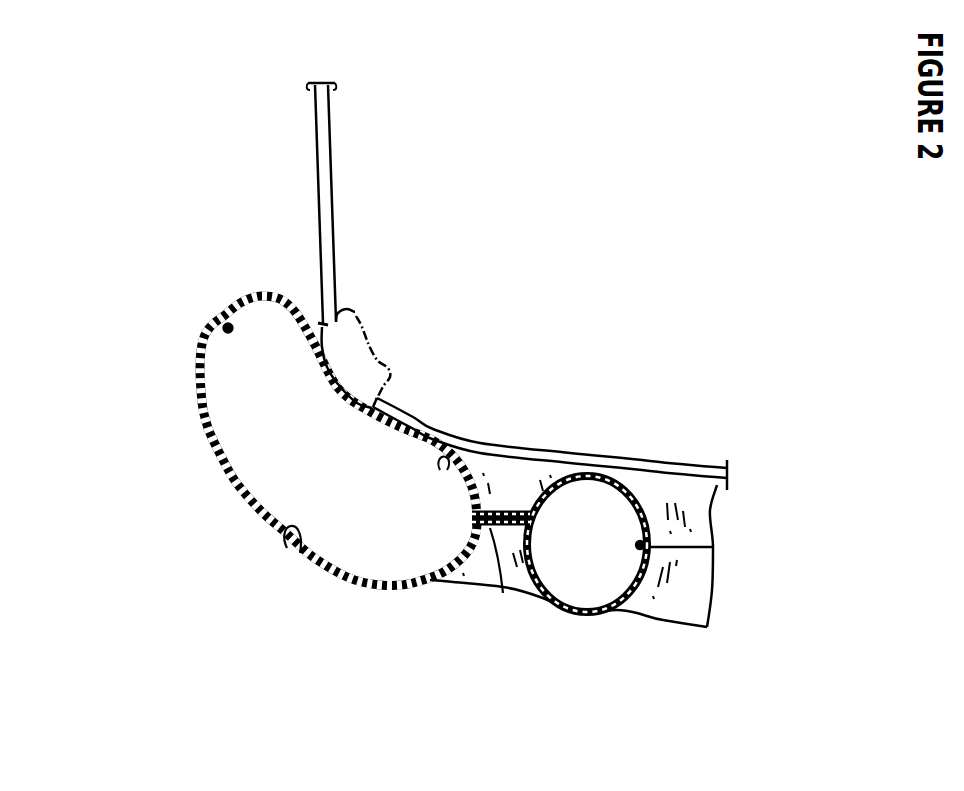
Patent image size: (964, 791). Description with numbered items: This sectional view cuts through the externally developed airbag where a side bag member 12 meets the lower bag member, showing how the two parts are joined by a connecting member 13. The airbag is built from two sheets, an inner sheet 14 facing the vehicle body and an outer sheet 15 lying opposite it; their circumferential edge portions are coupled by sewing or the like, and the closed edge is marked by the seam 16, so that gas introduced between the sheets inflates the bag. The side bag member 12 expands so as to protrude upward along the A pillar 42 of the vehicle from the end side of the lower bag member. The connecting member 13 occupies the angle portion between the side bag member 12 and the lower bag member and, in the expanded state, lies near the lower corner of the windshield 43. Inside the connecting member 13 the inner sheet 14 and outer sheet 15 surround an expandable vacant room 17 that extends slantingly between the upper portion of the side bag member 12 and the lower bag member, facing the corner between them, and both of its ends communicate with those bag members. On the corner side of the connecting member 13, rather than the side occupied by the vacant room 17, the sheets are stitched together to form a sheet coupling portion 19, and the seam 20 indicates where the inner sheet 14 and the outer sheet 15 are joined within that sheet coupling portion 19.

The side bag member 12 is at (157, 490).
The connecting member 13 is at (558, 698).
The inner sheet 14 is at (437, 430).
The outer sheet 15 is at (243, 623).
The seam 16 is at (666, 645).
The vacant room 17 is at (598, 527).
The sheet coupling portion 19 is at (503, 622).
The seam 20 is at (530, 490).
The A pillar 42 is at (346, 318).
The windshield 43 is at (718, 466).